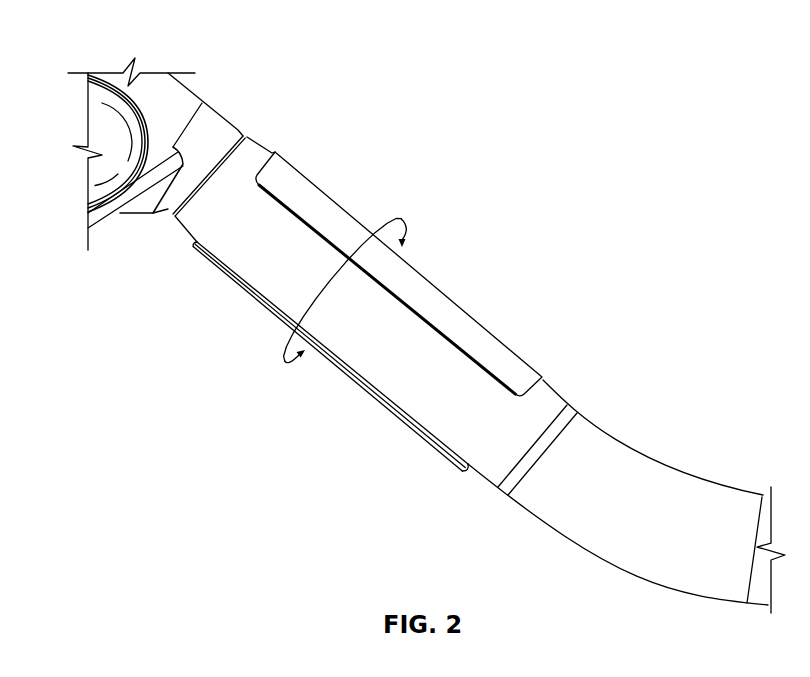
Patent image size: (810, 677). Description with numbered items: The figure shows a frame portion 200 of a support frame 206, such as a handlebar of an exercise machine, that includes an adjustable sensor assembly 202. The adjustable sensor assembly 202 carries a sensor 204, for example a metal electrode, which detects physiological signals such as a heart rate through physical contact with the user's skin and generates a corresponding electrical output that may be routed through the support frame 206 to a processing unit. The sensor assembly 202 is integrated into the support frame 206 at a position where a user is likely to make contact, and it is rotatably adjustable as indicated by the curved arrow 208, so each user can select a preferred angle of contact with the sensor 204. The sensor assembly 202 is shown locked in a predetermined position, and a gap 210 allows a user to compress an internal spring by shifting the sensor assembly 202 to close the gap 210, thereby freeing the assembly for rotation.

The frame portion 200 is at (100, 48).
The adjustable sensor assembly 202 is at (437, 253).
The sensor 204 is at (486, 327).
The support frame 206 is at (683, 471).
The curved arrow 208 is at (281, 348).
The gap 210 is at (170, 217).